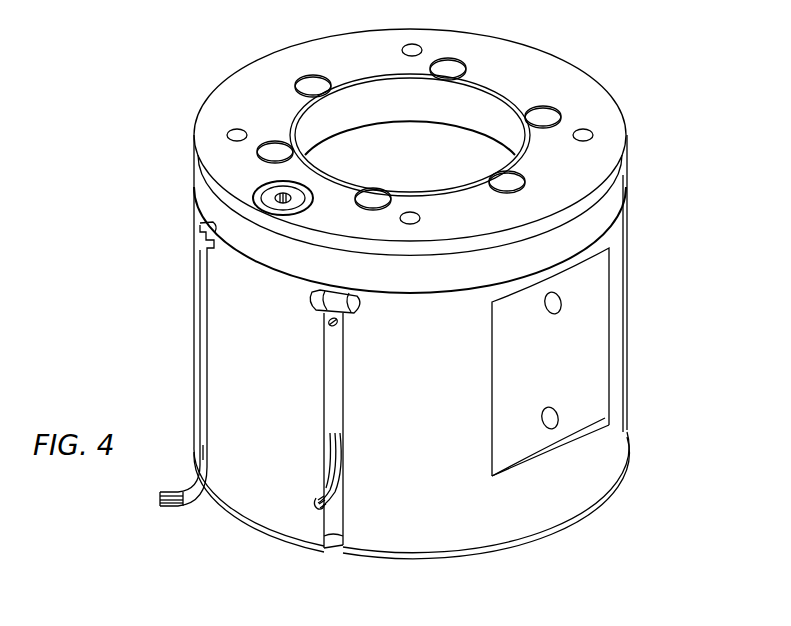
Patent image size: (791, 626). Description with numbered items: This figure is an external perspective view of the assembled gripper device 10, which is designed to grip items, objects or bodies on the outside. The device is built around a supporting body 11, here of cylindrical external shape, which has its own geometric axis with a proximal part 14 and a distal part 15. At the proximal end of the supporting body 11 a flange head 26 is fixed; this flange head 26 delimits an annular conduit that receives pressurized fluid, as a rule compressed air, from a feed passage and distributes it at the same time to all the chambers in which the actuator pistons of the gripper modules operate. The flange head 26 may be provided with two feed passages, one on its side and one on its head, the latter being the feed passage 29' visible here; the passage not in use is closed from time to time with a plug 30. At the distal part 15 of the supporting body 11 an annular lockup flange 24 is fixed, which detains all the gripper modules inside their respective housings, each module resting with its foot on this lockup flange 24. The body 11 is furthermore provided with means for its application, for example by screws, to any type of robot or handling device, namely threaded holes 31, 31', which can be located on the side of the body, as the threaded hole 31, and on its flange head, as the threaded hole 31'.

The gripper device 10 is at (645, 311).
The supporting body 11 is at (612, 434).
The proximal part 14 is at (178, 275).
The distal part 15 is at (630, 462).
The annular lockup flange 24 is at (455, 559).
The flange head 26 is at (531, 57).
The feed passage 29' is at (199, 213).
The plug 30 is at (263, 189).
The threaded hole 31 is at (583, 491).
The threaded hole 31' is at (637, 115).